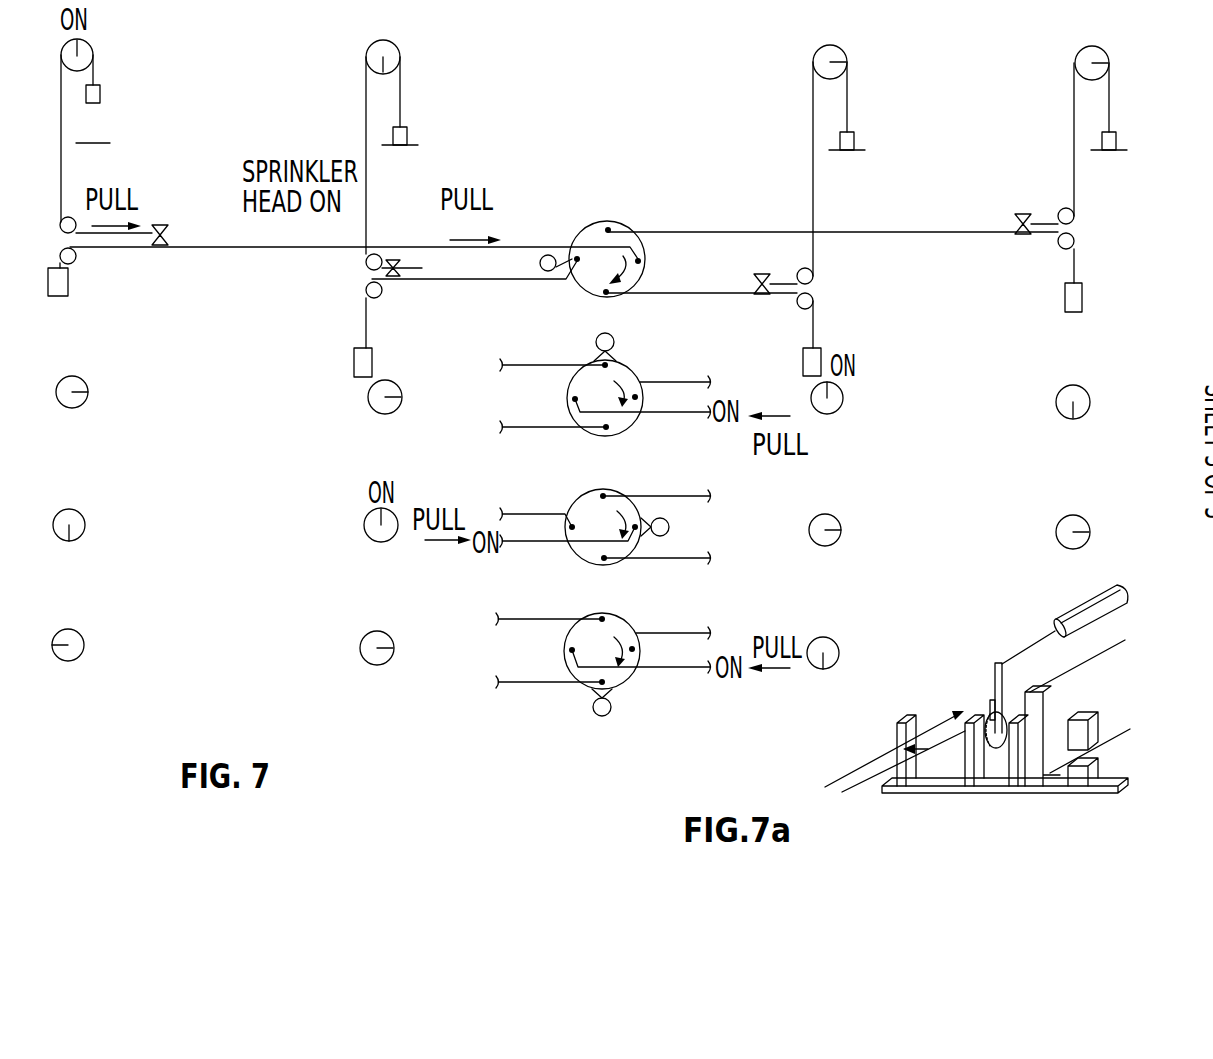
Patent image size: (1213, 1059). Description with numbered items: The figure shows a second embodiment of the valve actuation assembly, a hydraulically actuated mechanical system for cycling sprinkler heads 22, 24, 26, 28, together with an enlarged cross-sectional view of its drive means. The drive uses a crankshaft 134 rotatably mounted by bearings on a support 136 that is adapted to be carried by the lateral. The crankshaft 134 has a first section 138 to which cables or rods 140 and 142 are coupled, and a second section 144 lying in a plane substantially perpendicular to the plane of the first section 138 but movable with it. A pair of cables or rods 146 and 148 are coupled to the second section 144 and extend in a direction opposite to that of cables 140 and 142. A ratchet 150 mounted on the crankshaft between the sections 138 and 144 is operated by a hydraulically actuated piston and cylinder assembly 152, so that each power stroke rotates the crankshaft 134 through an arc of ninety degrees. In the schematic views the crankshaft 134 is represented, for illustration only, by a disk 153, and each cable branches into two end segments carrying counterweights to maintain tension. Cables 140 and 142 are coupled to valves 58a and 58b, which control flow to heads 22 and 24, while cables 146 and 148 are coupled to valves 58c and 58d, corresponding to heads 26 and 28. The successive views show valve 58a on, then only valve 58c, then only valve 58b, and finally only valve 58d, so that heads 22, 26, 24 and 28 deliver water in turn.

In FIG. 7, the valve 58a is at (92, 50).
In FIG. 7, the valve 58b is at (400, 52).
In FIG. 7, the valve 58c is at (814, 56).
In FIG. 7, the valve 58d is at (1075, 62).
In FIG. 7, the head 22 is at (354, 272).
In FIG. 7, the head 24 is at (571, 528).
In FIG. 7, the head 26 is at (573, 397).
In FIG. 7, the head 28 is at (445, 640).
In FIG. 7, the cable 140 is at (403, 246).
In FIG. 7A, the cable 140 is at (1103, 650).
In FIG. 7, the cable 142 is at (436, 280).
In FIG. 7A, the cable 142 is at (1112, 750).
In FIG. 7, the cable 146 is at (713, 293).
In FIG. 7A, the cable 146 is at (860, 766).
In FIG. 7, the cable 148 is at (729, 232).
In FIG. 7A, the cable 148 is at (866, 788).
In FIG. 7, the disk 153 is at (590, 222).
In FIG. 7A, the crankshaft 134 is at (1062, 707).
In FIG. 7A, the support 136 is at (1068, 786).
In FIG. 7A, the first section 138 is at (1023, 782).
In FIG. 7A, the second section 144 is at (937, 718).
In FIG. 7A, the ratchet 150 is at (988, 770).
In FIG. 7A, the piston and cylinder assembly 152 is at (1044, 619).